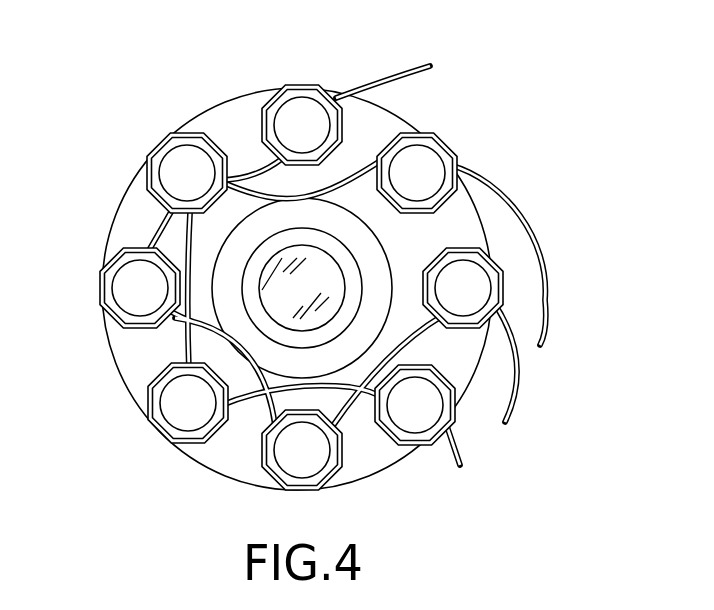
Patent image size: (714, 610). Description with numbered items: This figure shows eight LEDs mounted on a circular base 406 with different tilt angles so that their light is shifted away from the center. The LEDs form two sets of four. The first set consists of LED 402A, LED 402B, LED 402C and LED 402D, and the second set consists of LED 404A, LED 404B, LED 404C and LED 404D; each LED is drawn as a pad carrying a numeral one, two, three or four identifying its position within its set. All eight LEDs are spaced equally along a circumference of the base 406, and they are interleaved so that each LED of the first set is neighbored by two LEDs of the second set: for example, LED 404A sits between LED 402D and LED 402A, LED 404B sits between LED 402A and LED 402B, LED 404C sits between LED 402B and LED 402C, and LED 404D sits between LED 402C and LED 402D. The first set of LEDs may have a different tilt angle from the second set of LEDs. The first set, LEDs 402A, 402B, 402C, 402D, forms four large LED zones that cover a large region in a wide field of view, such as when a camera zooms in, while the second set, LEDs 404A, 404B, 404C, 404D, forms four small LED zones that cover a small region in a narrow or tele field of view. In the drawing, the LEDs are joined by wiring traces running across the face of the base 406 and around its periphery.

The base 406 is at (250, 112).
The LED of the second set 404A is at (312, 108).
The LED of the first set 402A is at (426, 152).
The LED of the second set 404B is at (478, 284).
The LED of the first set 402B is at (435, 407).
The LED of the second set 404C is at (318, 463).
The LED of the first set 402C is at (173, 418).
The LED of the second set 404D is at (118, 285).
The LED of the first set 402D is at (177, 157).